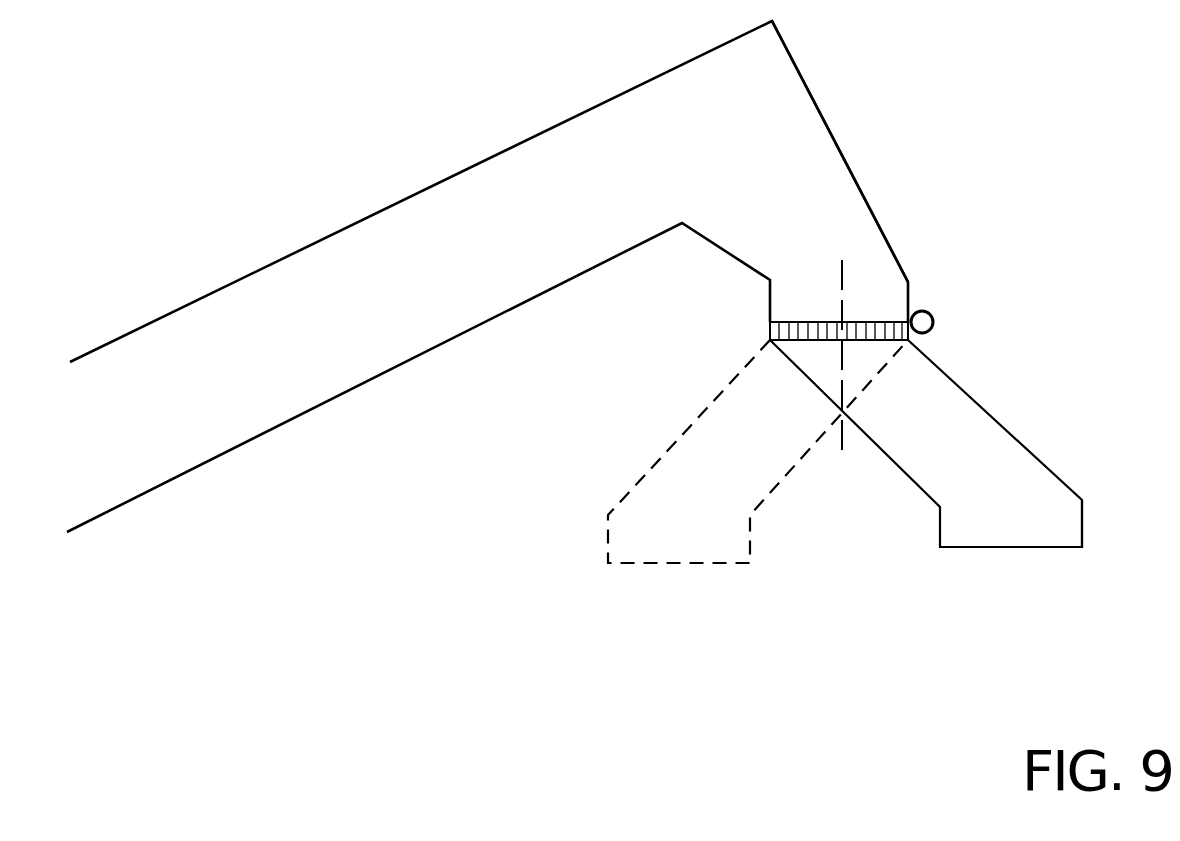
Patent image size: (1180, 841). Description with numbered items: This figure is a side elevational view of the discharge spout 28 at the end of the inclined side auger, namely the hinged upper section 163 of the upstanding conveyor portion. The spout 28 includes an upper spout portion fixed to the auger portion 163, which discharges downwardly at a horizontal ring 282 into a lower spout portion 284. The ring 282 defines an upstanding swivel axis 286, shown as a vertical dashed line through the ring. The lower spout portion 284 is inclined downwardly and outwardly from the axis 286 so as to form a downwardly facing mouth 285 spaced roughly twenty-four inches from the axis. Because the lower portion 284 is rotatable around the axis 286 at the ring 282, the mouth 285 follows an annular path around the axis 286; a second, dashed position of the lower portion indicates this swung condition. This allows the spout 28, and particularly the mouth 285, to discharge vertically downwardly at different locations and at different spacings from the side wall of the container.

The hinged upper section 163 is at (432, 184).
The spout 28 is at (893, 248).
The horizontal ring 282 is at (777, 337).
The lower spout portion 284 is at (982, 415).
The mouth 285 is at (1063, 522).
The swivel axis 286 is at (843, 480).